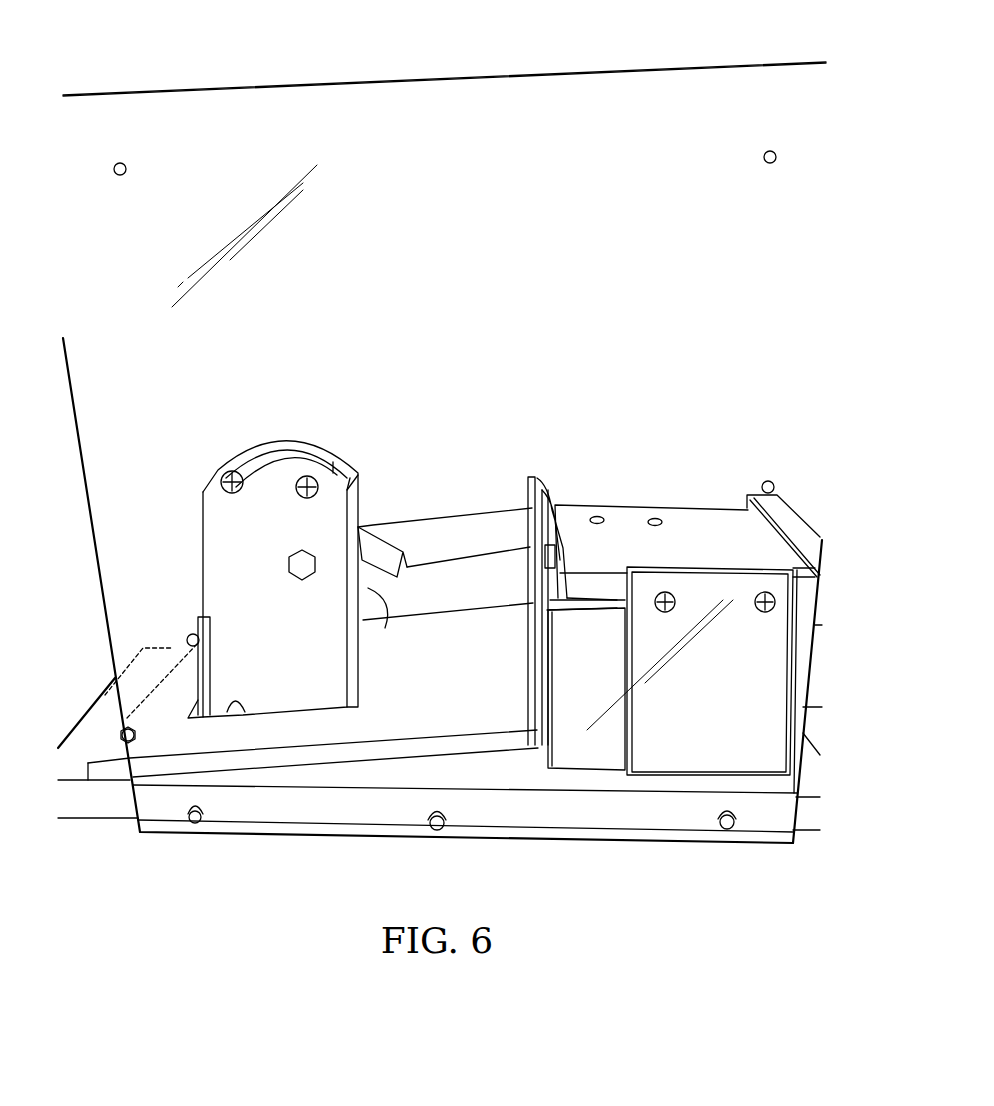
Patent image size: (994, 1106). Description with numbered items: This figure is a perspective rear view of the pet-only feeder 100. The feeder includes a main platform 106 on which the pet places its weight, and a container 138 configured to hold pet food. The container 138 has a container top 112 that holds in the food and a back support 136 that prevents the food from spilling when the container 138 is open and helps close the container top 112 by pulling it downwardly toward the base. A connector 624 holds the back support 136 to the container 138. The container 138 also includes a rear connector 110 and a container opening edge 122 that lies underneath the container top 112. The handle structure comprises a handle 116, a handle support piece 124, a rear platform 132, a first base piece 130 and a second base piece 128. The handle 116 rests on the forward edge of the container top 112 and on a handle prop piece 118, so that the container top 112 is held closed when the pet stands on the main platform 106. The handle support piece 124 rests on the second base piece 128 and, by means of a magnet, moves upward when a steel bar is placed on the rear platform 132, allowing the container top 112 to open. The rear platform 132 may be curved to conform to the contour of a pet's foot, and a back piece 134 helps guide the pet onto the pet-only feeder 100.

The pet-only feeder 100 is at (247, 58).
The main platform 106 is at (110, 748).
The rear connector 110 is at (797, 527).
The container top 112 is at (697, 525).
The handle 116 is at (460, 532).
The handle prop piece 118 is at (552, 505).
The container opening edge 122 is at (530, 598).
The handle support piece 124 is at (367, 600).
The second base piece 128 is at (207, 623).
The first base piece 130 is at (193, 670).
The rear platform 132 is at (288, 455).
The back piece 134 is at (428, 103).
The back support 136 is at (757, 572).
The container 138 is at (575, 665).
The connector 624 is at (667, 592).